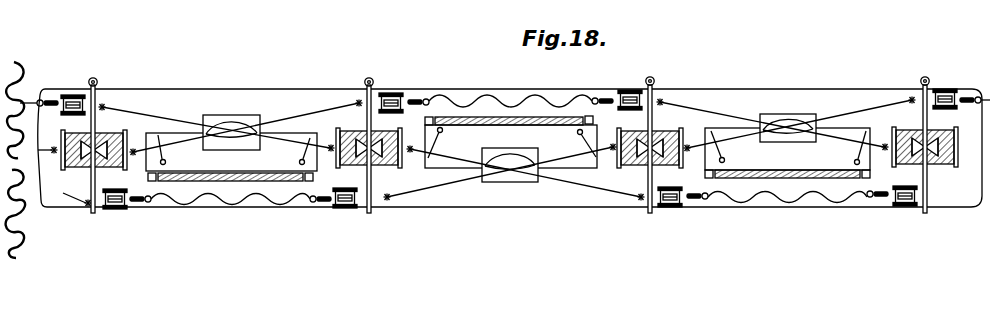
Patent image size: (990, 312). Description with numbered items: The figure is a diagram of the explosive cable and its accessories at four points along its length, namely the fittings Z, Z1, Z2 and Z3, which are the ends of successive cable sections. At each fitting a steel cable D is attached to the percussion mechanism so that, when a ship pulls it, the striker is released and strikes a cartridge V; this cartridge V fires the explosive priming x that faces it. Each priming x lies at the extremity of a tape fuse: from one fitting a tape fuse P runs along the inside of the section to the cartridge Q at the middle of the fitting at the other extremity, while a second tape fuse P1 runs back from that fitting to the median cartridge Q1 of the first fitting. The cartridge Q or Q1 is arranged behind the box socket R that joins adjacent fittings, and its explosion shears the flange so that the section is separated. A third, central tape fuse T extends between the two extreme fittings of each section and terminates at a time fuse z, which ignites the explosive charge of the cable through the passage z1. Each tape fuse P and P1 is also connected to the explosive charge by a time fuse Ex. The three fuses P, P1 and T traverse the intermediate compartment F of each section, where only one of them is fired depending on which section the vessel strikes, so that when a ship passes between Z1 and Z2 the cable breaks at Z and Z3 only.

The fitting Z is at (94, 139).
The fitting Z1 is at (369, 139).
The fitting Z2 is at (650, 137).
The fitting Z3 is at (925, 137).
The box socket R is at (940, 137).
The cartridge V is at (115, 209).
The central tape fuse T is at (173, 133).
The intermediate compartment F is at (226, 115).
The tape fuse P is at (494, 149).
The tape fuse P1 is at (523, 146).
The cartridge Q is at (330, 146).
The median cartridge Q1 is at (134, 150).
The resistance bar E is at (222, 173).
The time fuse Ex is at (166, 162).
The steel cable D is at (258, 204).
The time fuse z is at (147, 177).
The passage z1 is at (133, 201).
The explosive priming x is at (388, 200).